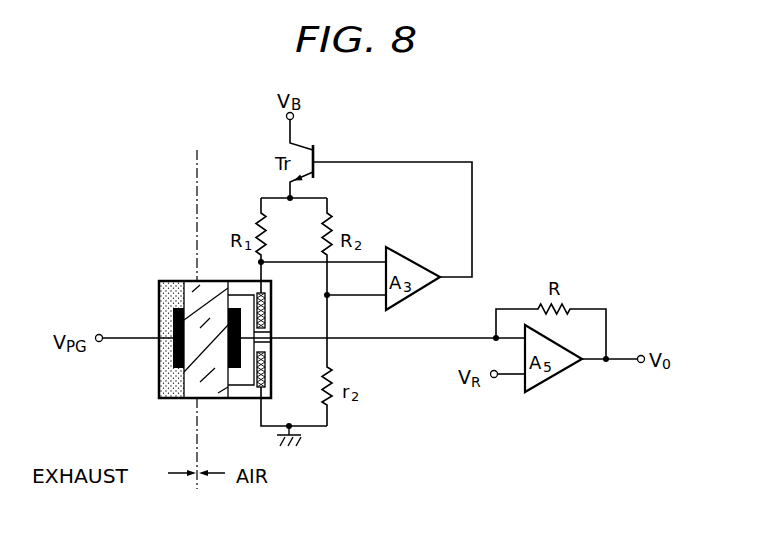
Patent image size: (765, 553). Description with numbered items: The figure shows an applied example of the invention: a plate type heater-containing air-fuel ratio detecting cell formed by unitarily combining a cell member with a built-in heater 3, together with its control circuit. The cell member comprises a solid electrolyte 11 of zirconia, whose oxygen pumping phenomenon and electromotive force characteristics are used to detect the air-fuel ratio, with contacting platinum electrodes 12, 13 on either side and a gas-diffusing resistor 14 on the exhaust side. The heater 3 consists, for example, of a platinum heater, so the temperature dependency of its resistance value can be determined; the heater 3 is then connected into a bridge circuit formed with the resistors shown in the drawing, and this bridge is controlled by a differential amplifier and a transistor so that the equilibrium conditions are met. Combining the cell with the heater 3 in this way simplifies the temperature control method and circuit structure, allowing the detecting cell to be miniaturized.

The built-in heater 3 is at (266, 375).
The solid electrolyte 11 is at (213, 385).
The platinum electrode 12 is at (229, 318).
The platinum electrode 13 is at (173, 357).
The gas-diffusing resistor 14 is at (163, 298).